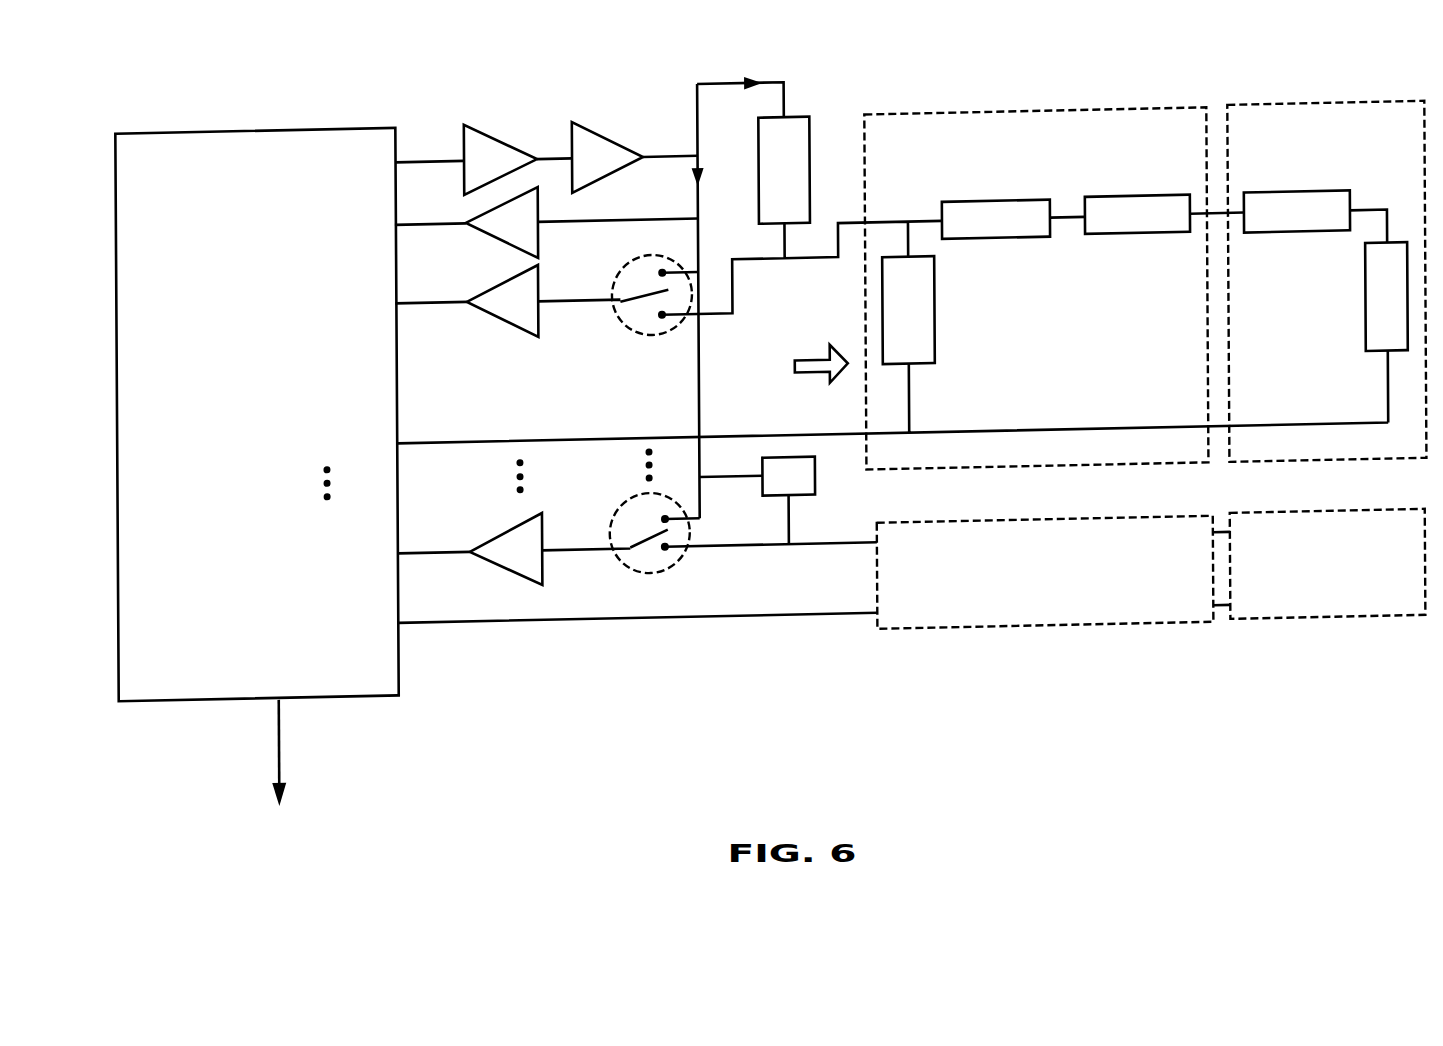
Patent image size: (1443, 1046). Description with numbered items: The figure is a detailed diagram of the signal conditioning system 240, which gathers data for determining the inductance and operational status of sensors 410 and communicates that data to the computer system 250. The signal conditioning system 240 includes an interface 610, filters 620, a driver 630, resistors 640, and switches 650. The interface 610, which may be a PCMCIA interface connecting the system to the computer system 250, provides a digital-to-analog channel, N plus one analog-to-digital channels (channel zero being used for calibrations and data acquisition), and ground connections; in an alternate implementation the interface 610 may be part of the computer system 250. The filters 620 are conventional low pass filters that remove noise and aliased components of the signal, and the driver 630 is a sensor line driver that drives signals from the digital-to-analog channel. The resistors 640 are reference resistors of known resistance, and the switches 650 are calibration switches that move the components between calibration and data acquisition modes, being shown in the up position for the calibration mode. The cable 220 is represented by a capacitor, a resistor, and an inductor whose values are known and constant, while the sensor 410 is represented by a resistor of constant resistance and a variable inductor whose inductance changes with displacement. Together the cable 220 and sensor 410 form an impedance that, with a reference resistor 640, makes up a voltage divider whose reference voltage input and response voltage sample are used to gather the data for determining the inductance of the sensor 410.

The signal conditioning system 240 is at (228, 48).
The interface 610 is at (276, 119).
The filters 620 is at (492, 126).
The driver 630 is at (602, 128).
The resistors 640 is at (802, 120).
The switches 650 is at (651, 331).
The cable 220 is at (1040, 115).
The sensor 410 is at (1320, 115).
The computer system 250 is at (282, 799).